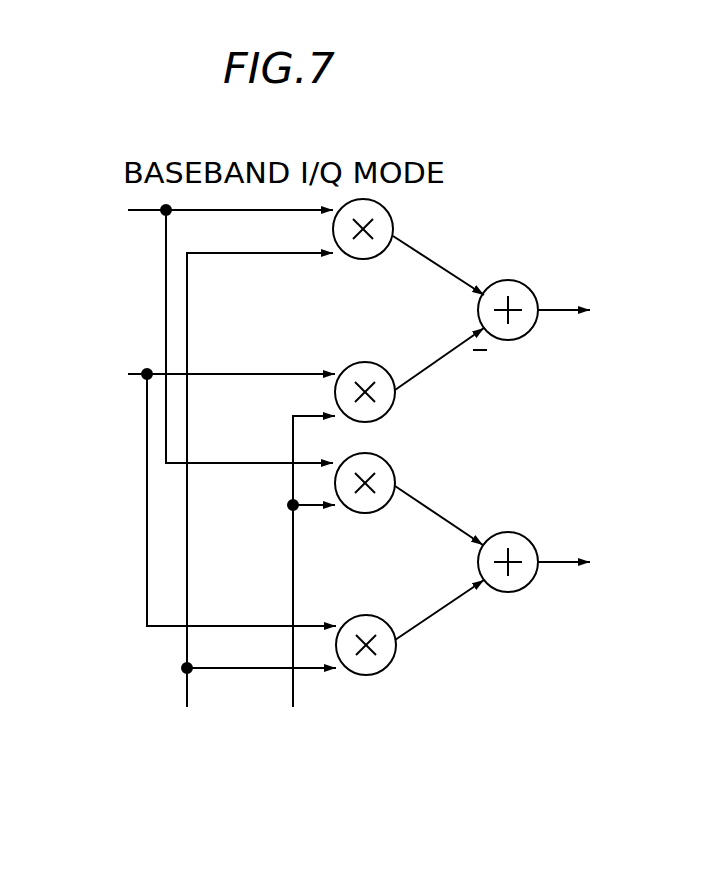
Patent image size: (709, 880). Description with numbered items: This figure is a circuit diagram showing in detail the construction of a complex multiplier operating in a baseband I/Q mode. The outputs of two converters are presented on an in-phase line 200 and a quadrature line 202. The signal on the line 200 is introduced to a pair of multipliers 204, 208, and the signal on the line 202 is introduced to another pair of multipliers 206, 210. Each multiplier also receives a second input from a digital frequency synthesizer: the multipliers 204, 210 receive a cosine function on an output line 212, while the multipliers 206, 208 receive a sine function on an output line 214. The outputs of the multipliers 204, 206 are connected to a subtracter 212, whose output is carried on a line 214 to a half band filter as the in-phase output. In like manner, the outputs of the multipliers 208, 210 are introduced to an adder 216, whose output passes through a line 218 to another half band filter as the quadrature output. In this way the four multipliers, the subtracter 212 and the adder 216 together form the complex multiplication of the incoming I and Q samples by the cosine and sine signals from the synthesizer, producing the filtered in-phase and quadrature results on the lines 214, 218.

The line 200 is at (147, 212).
The line 202 is at (137, 377).
The multiplier 204 is at (392, 216).
The multiplier 206 is at (393, 410).
The multiplier 208 is at (393, 466).
The multiplier 210 is at (393, 661).
The subtracter 212 is at (186, 688).
The line 214 is at (295, 690).
The adder 216 is at (522, 538).
The line 218 is at (557, 563).